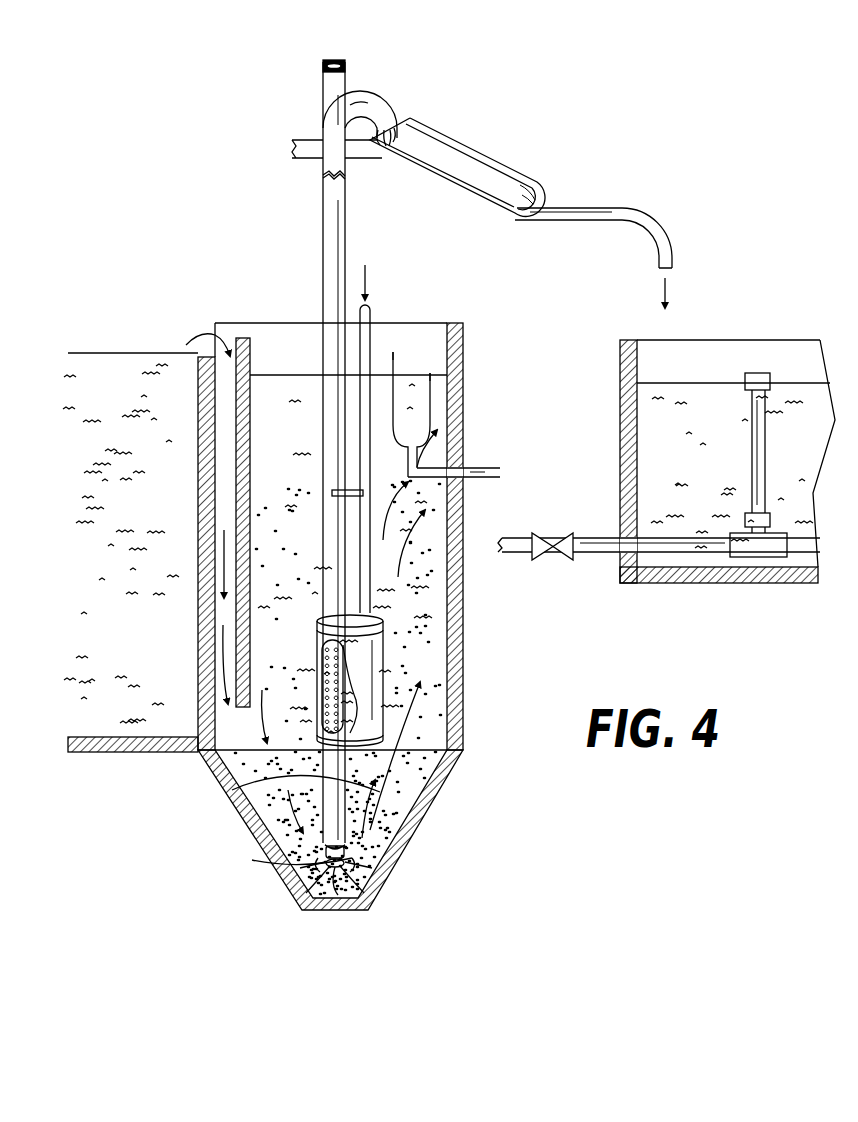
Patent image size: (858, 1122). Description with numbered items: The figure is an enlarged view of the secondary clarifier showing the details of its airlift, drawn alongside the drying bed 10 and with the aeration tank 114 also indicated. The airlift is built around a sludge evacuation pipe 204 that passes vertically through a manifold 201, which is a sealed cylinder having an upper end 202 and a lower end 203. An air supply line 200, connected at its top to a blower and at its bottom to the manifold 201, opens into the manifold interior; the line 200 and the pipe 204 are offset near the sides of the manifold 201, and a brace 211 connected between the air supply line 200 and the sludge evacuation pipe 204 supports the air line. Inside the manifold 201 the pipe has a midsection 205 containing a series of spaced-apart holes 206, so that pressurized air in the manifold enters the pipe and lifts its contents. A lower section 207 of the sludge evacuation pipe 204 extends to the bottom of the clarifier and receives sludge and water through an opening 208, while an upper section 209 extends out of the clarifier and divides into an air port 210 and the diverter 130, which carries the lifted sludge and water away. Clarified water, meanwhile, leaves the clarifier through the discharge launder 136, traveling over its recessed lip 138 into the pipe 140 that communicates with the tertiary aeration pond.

The drying bed 10 is at (620, 432).
The aeration tank 114 is at (142, 752).
The diverter 130 is at (500, 164).
The discharge launder 136 is at (405, 434).
The recessed lip 138 is at (432, 404).
The pipe 140 is at (475, 480).
The air supply line 200 is at (372, 330).
The manifold 201 is at (386, 655).
The upper end 202 is at (380, 616).
The lower end 203 is at (436, 797).
The sludge evacuation pipe 204 is at (346, 246).
The midsection 205 is at (199, 668).
The spaced-apart holes 206 is at (322, 680).
The lower section 207 is at (265, 826).
The opening 208 is at (312, 900).
The upper section 209 is at (325, 125).
The air port 210 is at (348, 66).
The brace 211 is at (331, 493).